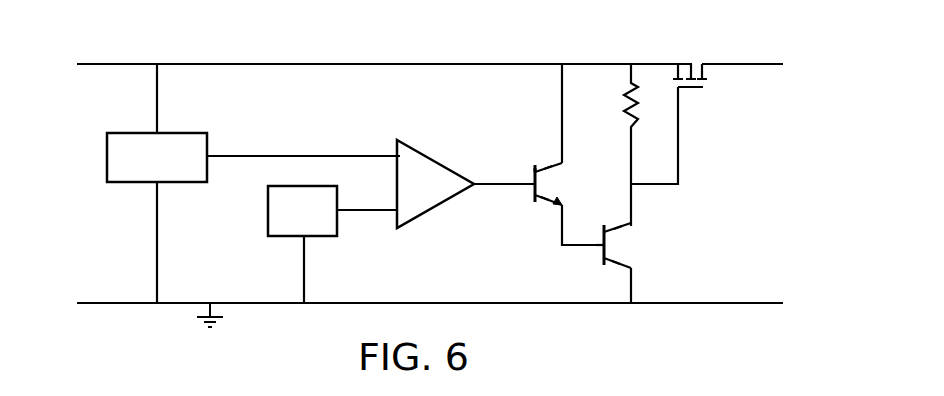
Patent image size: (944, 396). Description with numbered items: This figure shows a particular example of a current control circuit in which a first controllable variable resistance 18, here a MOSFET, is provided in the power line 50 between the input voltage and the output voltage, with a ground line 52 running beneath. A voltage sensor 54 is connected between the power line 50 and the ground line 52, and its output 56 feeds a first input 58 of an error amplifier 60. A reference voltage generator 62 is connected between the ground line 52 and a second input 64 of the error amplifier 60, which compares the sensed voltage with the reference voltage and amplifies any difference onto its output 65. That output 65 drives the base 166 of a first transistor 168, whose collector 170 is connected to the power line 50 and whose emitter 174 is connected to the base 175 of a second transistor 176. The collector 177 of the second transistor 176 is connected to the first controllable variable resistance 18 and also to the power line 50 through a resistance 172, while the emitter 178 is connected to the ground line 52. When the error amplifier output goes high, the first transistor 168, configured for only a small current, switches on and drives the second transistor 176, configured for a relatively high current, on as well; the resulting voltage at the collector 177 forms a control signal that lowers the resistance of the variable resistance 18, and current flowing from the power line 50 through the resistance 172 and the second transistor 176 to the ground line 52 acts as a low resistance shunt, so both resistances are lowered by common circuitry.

The first controllable variable resistance 18 is at (690, 63).
The power line 50 is at (429, 63).
The ground line 52 is at (542, 304).
The voltage sensor 54 is at (107, 141).
The output of the voltage sensor 56 is at (209, 152).
The first input of the error amplifier 58 is at (396, 152).
The error amplifier 60 is at (440, 162).
The reference voltage generator 62 is at (268, 191).
The second input of the error amplifier 64 is at (396, 218).
The output of the error amplifier 65 is at (478, 188).
The base 166 is at (533, 170).
The first transistor 168 is at (555, 178).
The collector 170 is at (546, 165).
The resistance 172 is at (629, 88).
The emitter 174 is at (545, 202).
The base 175 is at (600, 248).
The second transistor 176 is at (626, 242).
The collector 177 is at (617, 228).
The emitter 178 is at (617, 265).